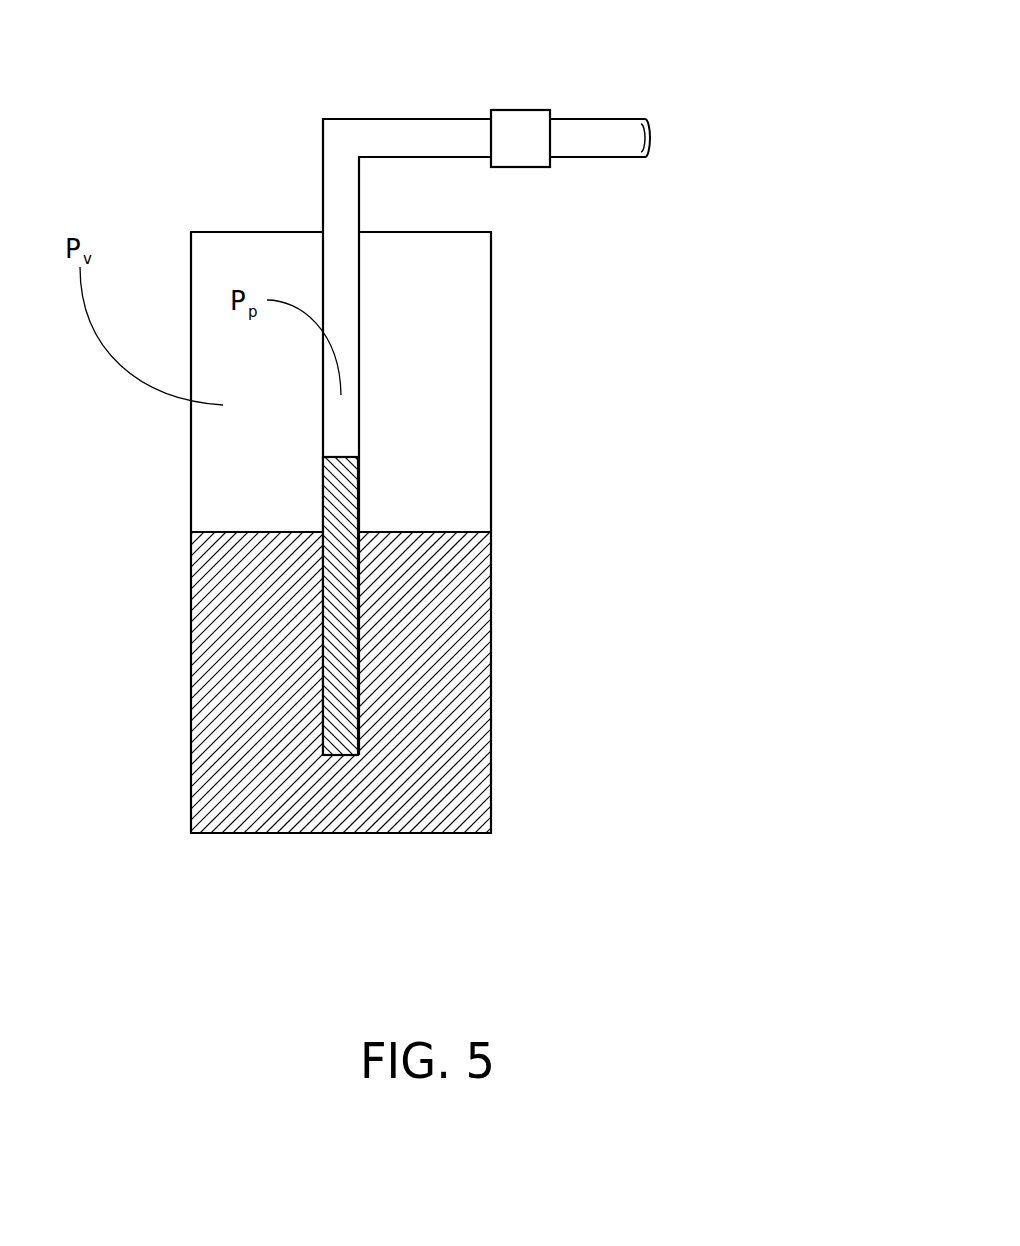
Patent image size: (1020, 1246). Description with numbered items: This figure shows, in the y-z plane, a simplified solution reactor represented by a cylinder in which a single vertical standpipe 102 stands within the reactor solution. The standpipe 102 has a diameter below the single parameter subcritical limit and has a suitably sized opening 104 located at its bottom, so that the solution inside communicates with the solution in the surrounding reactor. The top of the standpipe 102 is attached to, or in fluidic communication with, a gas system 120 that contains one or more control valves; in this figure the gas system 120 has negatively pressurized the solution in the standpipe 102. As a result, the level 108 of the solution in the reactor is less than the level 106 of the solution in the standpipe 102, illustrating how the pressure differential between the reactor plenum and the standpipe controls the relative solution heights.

The standpipe 102 is at (361, 325).
The opening 104 is at (339, 757).
The level of the solution in standpipe 106 is at (341, 458).
The level of the solution in the reactor 108 is at (267, 677).
The gas system 120 is at (523, 110).